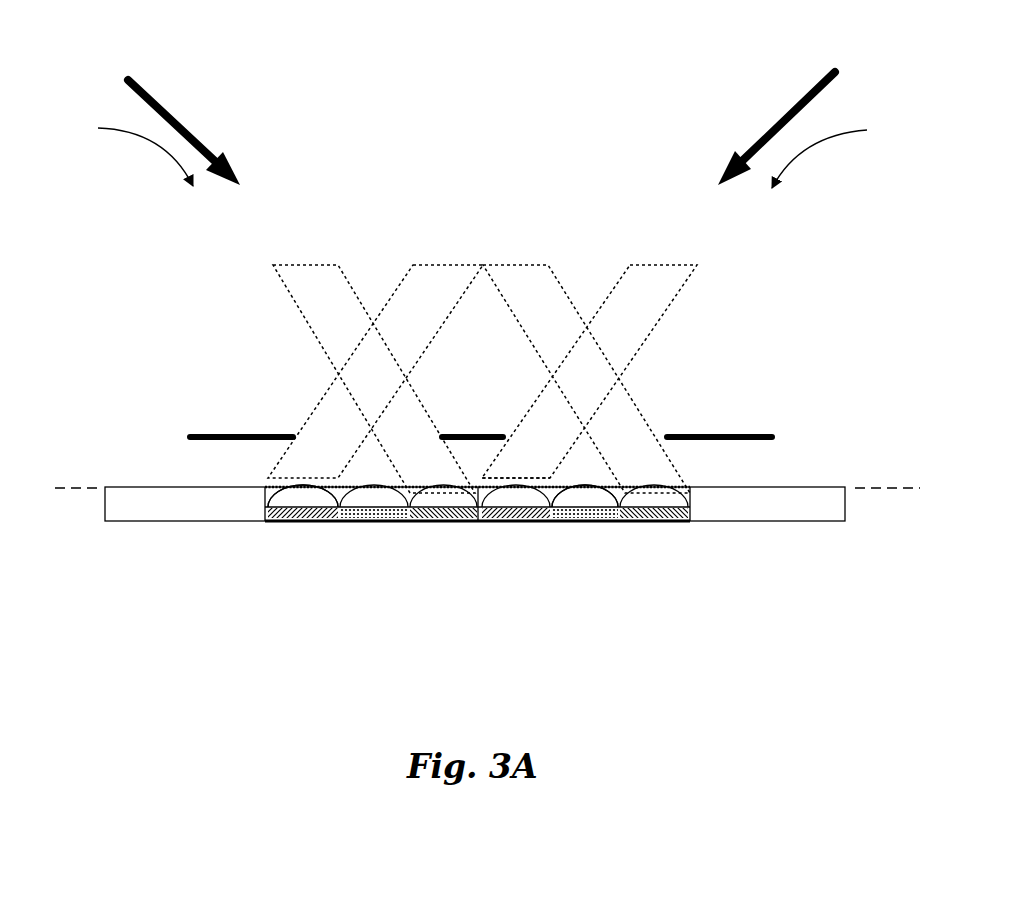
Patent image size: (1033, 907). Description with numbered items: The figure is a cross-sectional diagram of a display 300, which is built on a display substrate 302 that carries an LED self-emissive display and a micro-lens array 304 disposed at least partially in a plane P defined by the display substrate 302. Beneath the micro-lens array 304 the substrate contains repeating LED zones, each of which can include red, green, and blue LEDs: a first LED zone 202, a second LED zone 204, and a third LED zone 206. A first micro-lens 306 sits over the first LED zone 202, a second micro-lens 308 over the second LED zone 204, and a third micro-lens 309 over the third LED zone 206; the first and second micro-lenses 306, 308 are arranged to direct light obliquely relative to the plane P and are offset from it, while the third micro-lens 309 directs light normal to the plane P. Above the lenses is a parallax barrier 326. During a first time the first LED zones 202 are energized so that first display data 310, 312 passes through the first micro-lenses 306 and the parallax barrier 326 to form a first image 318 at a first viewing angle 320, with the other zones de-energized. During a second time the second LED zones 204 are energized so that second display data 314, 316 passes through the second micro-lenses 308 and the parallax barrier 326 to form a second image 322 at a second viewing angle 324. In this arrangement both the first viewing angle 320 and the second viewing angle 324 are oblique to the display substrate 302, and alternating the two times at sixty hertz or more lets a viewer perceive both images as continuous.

The display 300 is at (486, 148).
The display substrate 302 is at (158, 522).
The first LED zone 202 is at (280, 522).
The second LED zone 204 is at (433, 522).
The third LED zone 206 is at (357, 522).
The micro-lens array 304 is at (560, 475).
The first micro-lens 306 is at (335, 487).
The second micro-lens 308 is at (442, 490).
The third micro-lens 309 is at (587, 488).
The first display data 310 is at (457, 265).
The first display data 312 is at (662, 263).
The second display data 314 is at (508, 265).
The second display data 316 is at (288, 262).
The first image 318 is at (841, 154).
The first viewing angle 320 is at (790, 105).
The second image 322 is at (122, 152).
The second viewing angle 324 is at (173, 110).
The parallax barrier 326 is at (190, 435).
The plane P is at (912, 490).